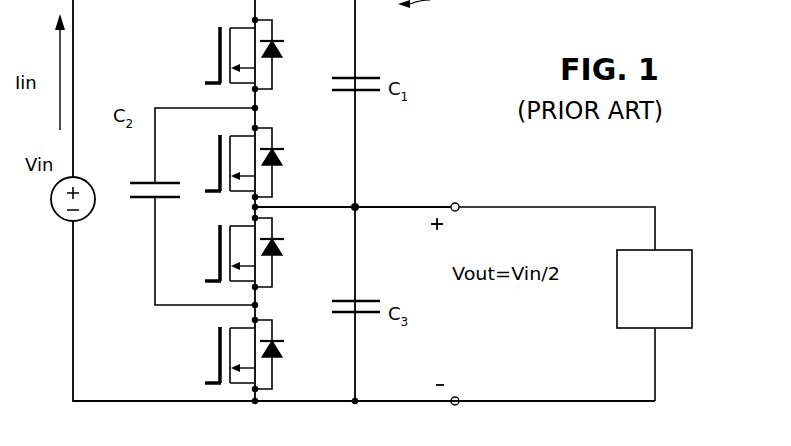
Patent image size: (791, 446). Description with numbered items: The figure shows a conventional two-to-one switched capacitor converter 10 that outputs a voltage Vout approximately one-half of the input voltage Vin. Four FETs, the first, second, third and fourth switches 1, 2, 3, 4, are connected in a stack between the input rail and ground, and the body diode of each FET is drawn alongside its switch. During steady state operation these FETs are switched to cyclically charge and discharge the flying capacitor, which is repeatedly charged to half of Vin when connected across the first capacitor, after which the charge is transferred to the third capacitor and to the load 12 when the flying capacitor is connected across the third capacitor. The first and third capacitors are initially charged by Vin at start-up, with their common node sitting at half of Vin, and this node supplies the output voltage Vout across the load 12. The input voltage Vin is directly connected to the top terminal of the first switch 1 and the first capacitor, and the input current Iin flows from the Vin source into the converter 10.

The load 12 is at (693, 279).
The switched capacitor converter 10 is at (414, 4).
The switch Q1 1 is at (232, 54).
The switch Q2 2 is at (232, 162).
The switch Q3 3 is at (232, 252).
The switch Q4 4 is at (232, 354).